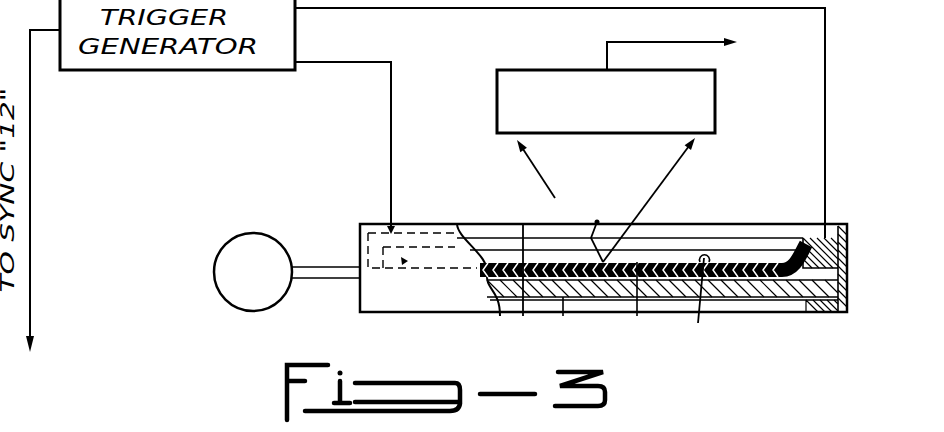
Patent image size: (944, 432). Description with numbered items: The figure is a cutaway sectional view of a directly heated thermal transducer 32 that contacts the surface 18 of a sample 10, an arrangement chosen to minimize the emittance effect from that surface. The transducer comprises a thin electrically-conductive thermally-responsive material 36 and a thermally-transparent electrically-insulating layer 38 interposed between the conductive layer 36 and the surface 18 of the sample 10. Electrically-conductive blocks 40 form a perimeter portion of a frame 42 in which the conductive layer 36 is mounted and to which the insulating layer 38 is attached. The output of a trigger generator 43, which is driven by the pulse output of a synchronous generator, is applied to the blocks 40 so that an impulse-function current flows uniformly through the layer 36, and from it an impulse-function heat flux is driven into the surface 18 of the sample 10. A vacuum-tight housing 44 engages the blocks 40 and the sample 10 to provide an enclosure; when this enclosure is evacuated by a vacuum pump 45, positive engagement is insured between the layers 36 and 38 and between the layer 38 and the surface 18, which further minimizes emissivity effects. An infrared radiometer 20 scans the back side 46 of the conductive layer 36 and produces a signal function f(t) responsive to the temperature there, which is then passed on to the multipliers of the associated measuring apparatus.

The sample 10 is at (563, 316).
The surface of sample 18 is at (522, 316).
The infrared radiometer 20 is at (575, 70).
The transducer 32 is at (706, 172).
The electrically-conductive thermally-responsive material 36 is at (525, 224).
The thermally-transparent electrically-insulating layer 38 is at (637, 316).
The electrically-conductive blocks 40 is at (848, 247).
The frame 42 is at (600, 200).
The trigger generator 43 is at (271, 70).
The vacuum-tight housing 44 is at (370, 294).
The vacuum pump 45 is at (214, 272).
The back side of the layer 46 is at (698, 323).